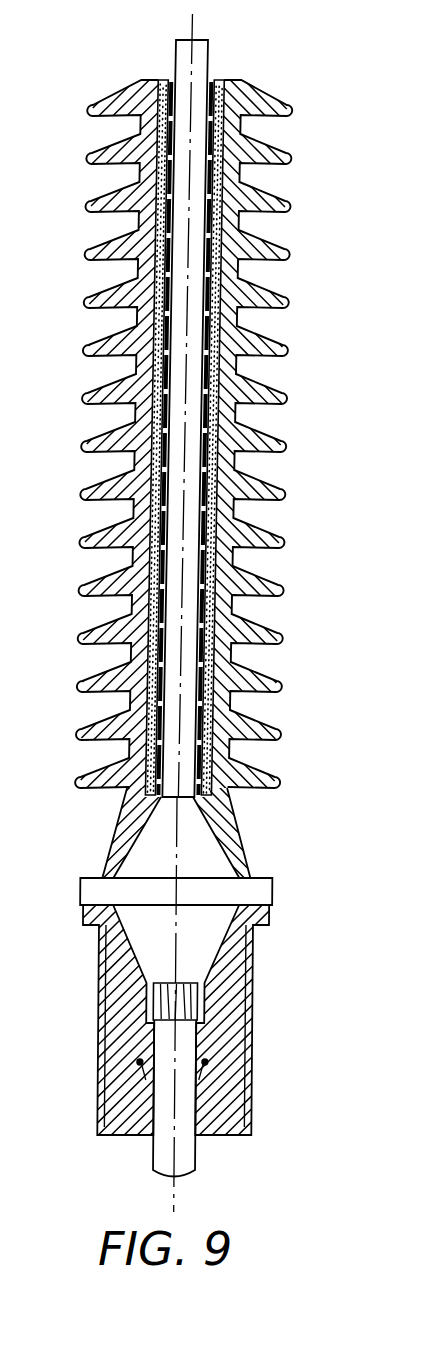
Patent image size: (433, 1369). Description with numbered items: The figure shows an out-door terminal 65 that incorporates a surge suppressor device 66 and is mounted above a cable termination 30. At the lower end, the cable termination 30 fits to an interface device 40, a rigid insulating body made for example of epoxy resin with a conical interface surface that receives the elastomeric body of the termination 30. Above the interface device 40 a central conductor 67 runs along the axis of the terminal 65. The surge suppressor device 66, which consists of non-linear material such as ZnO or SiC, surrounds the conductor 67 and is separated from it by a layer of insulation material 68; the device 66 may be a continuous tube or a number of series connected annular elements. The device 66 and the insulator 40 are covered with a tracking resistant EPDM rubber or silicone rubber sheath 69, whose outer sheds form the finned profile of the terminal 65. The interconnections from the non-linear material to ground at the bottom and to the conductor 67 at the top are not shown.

The cable termination 30 is at (262, 1078).
The interface device 40 is at (207, 862).
The out-door terminal 65 is at (218, 432).
The surge suppressor device 66 is at (213, 135).
The conductor 67 is at (200, 62).
The layer of insulation material 68 is at (207, 372).
The rubber sheath 69 is at (228, 225).